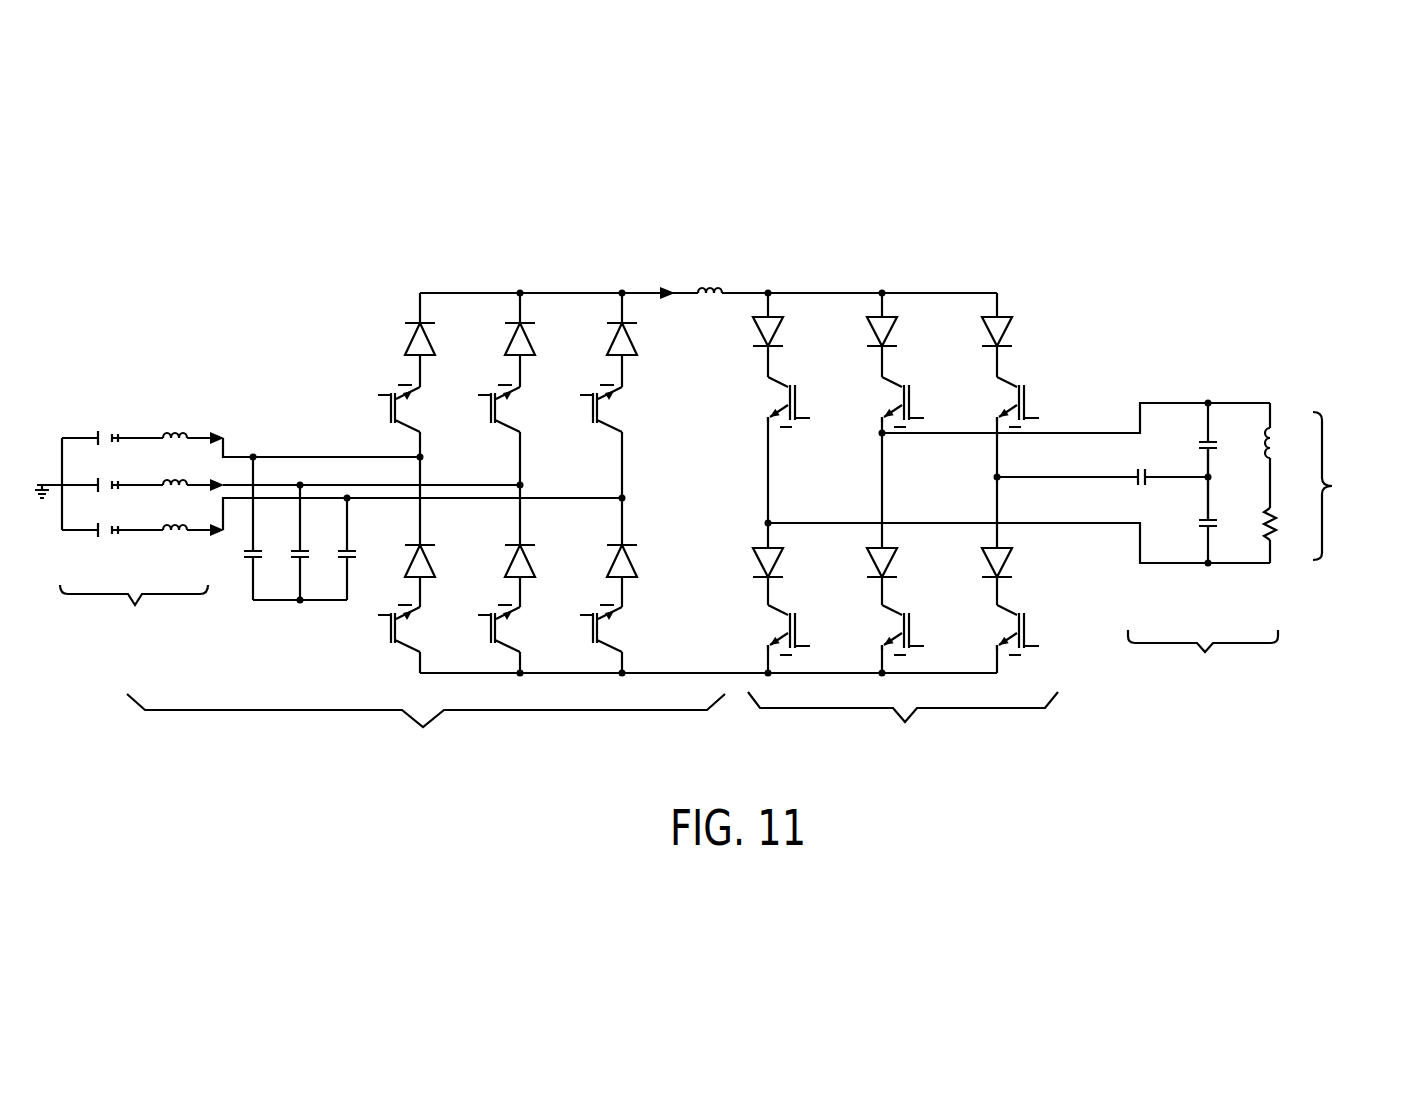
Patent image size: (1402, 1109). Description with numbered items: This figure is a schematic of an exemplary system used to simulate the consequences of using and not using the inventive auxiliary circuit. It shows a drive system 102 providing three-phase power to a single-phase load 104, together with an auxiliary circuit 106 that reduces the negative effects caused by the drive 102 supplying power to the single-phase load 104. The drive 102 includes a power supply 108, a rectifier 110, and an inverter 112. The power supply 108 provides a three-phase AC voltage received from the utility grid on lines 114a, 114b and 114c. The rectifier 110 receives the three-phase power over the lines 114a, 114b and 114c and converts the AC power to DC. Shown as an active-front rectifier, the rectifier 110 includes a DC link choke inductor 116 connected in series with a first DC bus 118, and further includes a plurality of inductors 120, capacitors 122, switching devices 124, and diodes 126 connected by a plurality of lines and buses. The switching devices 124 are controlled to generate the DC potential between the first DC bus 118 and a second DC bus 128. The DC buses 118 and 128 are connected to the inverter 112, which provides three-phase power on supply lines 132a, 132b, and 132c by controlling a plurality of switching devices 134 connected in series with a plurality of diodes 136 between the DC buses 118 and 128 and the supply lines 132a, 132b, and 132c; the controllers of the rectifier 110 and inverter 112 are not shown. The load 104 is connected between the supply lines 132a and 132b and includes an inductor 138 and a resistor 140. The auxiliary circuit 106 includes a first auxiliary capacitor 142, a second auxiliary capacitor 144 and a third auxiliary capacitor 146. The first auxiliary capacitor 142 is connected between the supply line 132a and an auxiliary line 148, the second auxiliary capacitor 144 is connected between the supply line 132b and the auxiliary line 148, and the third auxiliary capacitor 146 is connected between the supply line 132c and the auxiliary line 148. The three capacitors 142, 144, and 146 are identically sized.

The drive system 102 is at (310, 292).
The single-phase load 104 is at (1325, 482).
The auxiliary circuit 106 is at (1198, 522).
The power supply 108 is at (137, 506).
The rectifier 110 is at (562, 490).
The inverter 112 is at (919, 501).
The line 114a is at (132, 437).
The line 114b is at (150, 486).
The line 114c is at (145, 531).
The DC link choke inductor 116 is at (710, 287).
The first DC bus 118 is at (742, 292).
The inductors 120 is at (175, 437).
The capacitors 122 is at (340, 558).
The switching devices 124 is at (401, 410).
The diodes 126 is at (432, 340).
The second DC bus 128 is at (746, 672).
The supply line 132a is at (900, 434).
The supply line 132b is at (1050, 524).
The supply line 132c is at (1018, 476).
The switching devices 134 is at (805, 402).
The diodes 136 is at (778, 330).
The inductor 138 is at (1273, 440).
The resistor 140 is at (1275, 527).
The first auxiliary capacitor 142 is at (1203, 440).
The second auxiliary capacitor 144 is at (1205, 528).
The third auxiliary capacitor 146 is at (1145, 483).
The auxiliary line 148 is at (1213, 458).